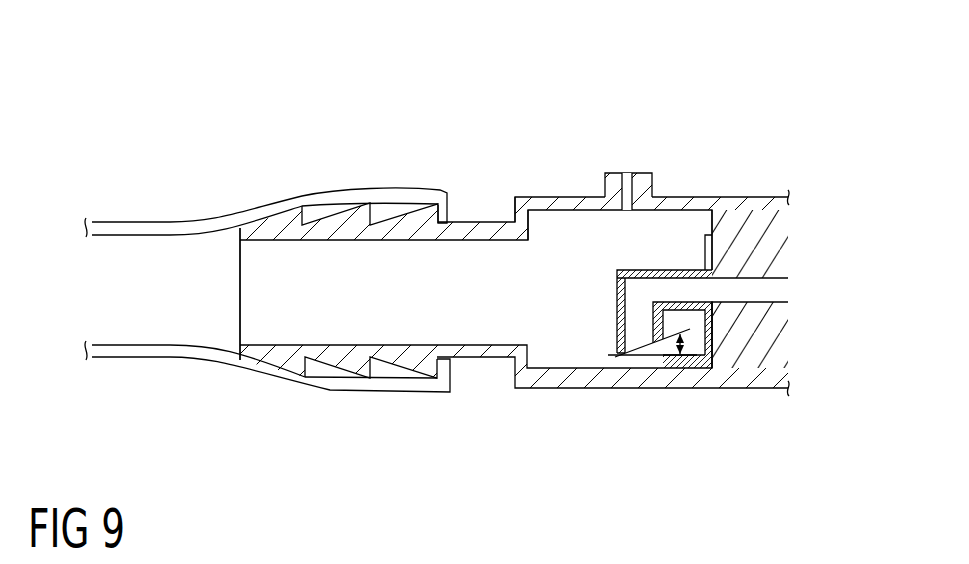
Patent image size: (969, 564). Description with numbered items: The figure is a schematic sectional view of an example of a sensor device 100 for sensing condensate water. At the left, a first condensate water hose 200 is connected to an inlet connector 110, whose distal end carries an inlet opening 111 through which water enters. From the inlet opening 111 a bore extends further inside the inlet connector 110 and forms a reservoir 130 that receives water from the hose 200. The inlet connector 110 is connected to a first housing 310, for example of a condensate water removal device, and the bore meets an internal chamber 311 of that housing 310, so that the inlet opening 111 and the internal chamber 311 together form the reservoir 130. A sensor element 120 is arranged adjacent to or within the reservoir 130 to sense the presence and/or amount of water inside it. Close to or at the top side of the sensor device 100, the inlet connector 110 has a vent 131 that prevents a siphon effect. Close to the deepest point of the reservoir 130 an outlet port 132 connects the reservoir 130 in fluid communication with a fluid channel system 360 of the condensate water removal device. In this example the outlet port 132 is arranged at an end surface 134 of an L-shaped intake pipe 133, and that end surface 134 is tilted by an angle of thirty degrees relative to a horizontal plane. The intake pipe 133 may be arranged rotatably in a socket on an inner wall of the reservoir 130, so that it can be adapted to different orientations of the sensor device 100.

The sensor device 100 is at (462, 84).
The inlet connector 110 is at (327, 208).
The inlet opening 111 is at (208, 263).
The sensor element 120 is at (691, 250).
The reservoir 130 is at (499, 262).
The vent 131 is at (646, 165).
The outlet port 132 is at (648, 360).
The L-shaped intake pipe 133 is at (612, 290).
The end surface 134 is at (618, 369).
The first condensate water hose 200 is at (156, 370).
The first housing 310 is at (756, 186).
The internal chamber 311 is at (556, 227).
The fluid channel system 360 is at (778, 271).